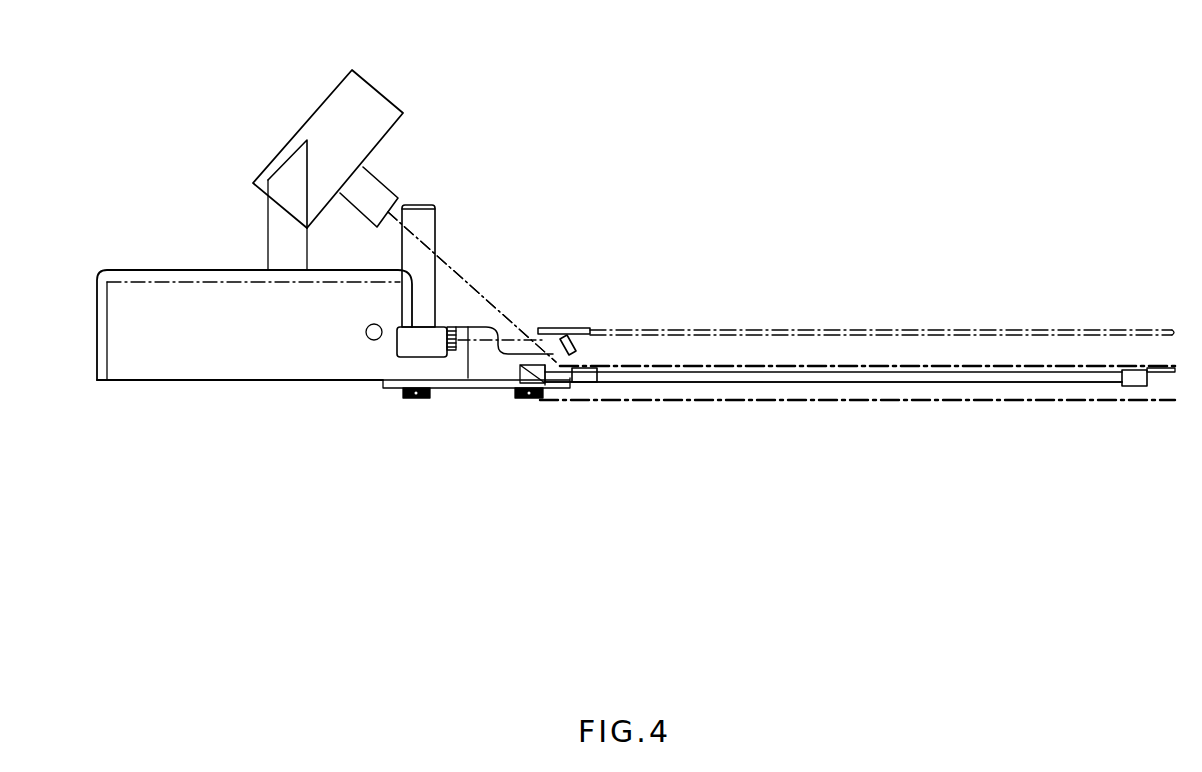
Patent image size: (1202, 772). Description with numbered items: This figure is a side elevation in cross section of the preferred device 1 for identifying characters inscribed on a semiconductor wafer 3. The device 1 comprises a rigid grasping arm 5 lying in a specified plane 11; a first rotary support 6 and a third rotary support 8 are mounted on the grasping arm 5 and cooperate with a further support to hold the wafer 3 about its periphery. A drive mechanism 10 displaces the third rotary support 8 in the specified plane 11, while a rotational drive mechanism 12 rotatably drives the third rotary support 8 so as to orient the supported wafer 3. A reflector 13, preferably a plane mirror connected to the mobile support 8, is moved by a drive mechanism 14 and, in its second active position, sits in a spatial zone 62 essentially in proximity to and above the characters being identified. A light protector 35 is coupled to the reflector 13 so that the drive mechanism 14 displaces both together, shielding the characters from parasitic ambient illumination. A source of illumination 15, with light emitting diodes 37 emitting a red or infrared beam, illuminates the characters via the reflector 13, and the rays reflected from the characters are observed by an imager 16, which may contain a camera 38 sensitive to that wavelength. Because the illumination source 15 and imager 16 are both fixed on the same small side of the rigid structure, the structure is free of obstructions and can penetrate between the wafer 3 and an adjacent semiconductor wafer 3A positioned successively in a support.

The device 1 is at (158, 388).
The semiconductor wafer 3 is at (792, 365).
The adjacent semiconductor wafer 3A is at (685, 400).
The rigid grasping arm 5 is at (813, 382).
The first rotary support 6 is at (1125, 387).
The third rotary support 8 is at (572, 375).
The drive mechanism 10 is at (437, 235).
The specified plane 11 is at (972, 365).
The rotational drive mechanism 12 is at (472, 287).
The reflector 13 is at (596, 335).
The drive mechanism 14 is at (472, 273).
The source of illumination 15 is at (408, 335).
The imager 16 is at (325, 108).
The light protector 35 is at (575, 335).
The light emitting diodes 37 is at (452, 330).
The camera 38 is at (378, 188).
The spatial zone 62 is at (605, 337).